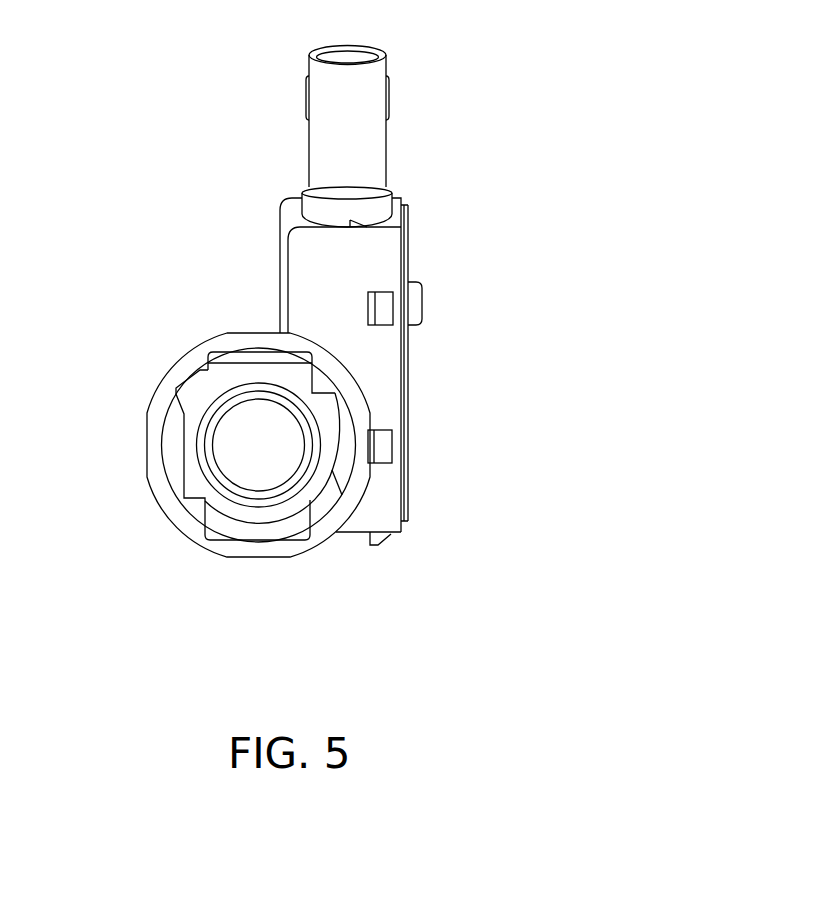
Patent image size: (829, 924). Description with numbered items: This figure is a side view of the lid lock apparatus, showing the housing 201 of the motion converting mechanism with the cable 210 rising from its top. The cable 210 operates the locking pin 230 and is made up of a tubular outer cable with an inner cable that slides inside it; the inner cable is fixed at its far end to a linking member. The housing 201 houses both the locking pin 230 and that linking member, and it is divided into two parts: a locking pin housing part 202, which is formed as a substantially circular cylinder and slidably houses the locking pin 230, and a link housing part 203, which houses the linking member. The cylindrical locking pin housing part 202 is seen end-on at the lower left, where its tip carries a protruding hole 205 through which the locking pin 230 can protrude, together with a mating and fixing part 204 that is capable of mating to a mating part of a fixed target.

The housing 201 is at (463, 255).
The locking pin housing part 202 is at (219, 377).
The link housing part 203 is at (390, 367).
The mating and fixing part 204 is at (179, 473).
The protruding hole 205 is at (247, 487).
The cable 210 is at (377, 112).
The locking pin 230 is at (256, 418).